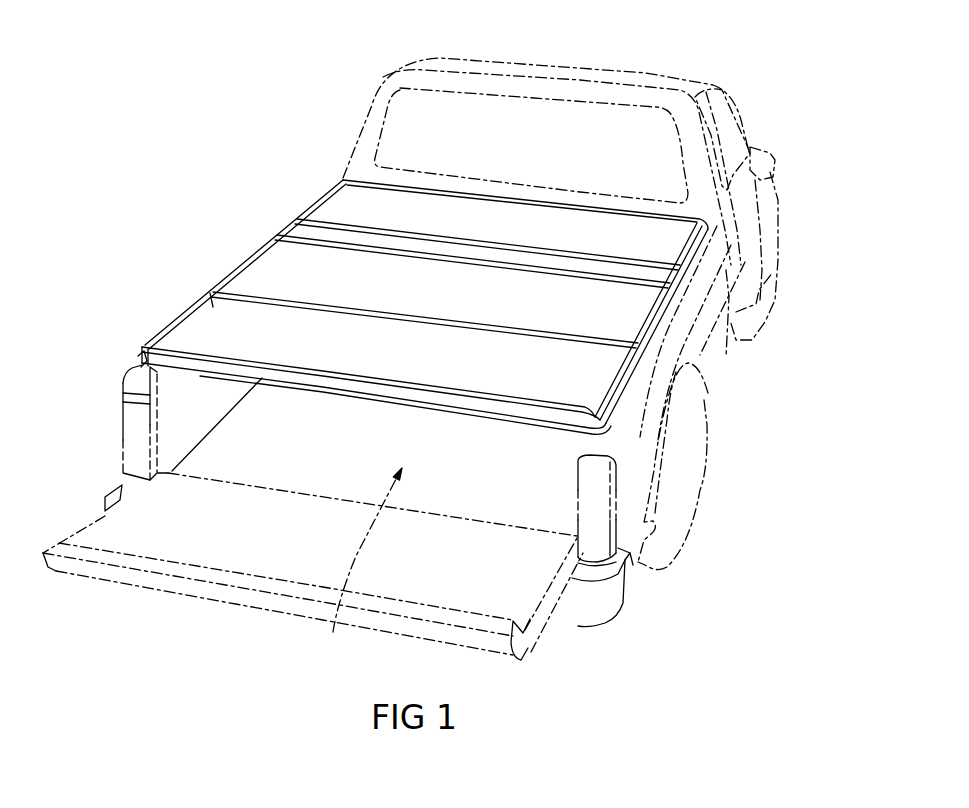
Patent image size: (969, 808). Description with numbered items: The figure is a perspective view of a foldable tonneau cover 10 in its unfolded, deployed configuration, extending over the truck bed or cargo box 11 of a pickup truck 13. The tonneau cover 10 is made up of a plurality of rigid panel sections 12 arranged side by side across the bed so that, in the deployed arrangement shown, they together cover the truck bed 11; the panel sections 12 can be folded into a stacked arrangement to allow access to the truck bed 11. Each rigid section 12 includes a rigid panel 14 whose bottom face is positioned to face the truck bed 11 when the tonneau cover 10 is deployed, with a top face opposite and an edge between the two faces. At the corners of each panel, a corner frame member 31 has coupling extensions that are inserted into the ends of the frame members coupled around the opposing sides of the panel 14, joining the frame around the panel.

The tonneau cover 10 is at (185, 150).
The truck bed or cargo box 11 is at (354, 624).
The rigid panel section 12 is at (310, 191).
The pickup truck 13 is at (379, 62).
The rigid panel 14 is at (207, 290).
The corner frame member 31 is at (140, 353).